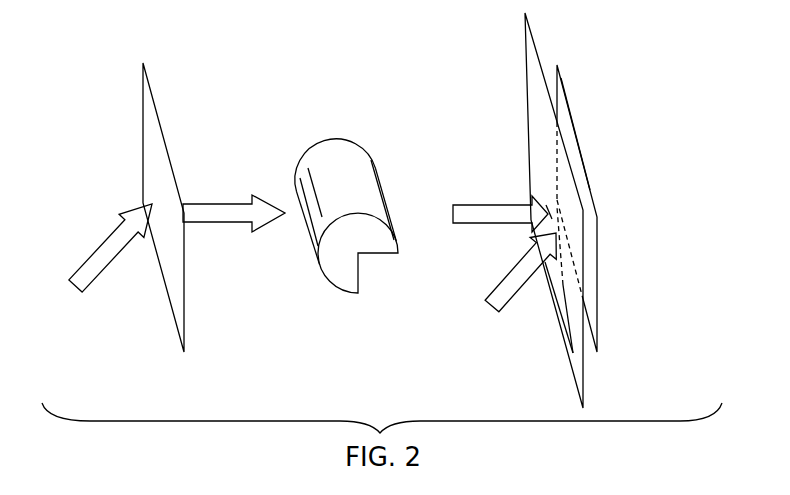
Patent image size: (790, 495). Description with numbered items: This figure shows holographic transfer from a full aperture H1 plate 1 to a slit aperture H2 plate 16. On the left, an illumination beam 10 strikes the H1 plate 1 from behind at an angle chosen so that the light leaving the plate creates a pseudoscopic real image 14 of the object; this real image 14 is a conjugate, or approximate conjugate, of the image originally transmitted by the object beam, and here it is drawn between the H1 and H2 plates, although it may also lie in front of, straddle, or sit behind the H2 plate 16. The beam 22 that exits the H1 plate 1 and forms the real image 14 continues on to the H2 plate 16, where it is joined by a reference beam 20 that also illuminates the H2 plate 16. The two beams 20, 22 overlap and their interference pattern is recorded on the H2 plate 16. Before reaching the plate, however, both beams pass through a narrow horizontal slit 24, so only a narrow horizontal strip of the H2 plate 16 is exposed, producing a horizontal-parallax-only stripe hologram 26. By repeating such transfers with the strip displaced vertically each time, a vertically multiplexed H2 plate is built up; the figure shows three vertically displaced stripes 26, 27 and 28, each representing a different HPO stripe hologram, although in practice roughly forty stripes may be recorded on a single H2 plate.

The H1 plate 1 is at (153, 147).
The illumination beam 10 is at (95, 255).
The beam 22 is at (233, 208).
The pseudoscopic real image 14 is at (336, 150).
The H2 plate 16 is at (594, 210).
The narrow horizontal slit 24 is at (548, 208).
The reference beam 20 is at (497, 285).
The HPO stripe hologram 26 is at (597, 317).
The HPO stripe hologram 27 is at (597, 272).
The HPO stripe hologram 28 is at (597, 228).